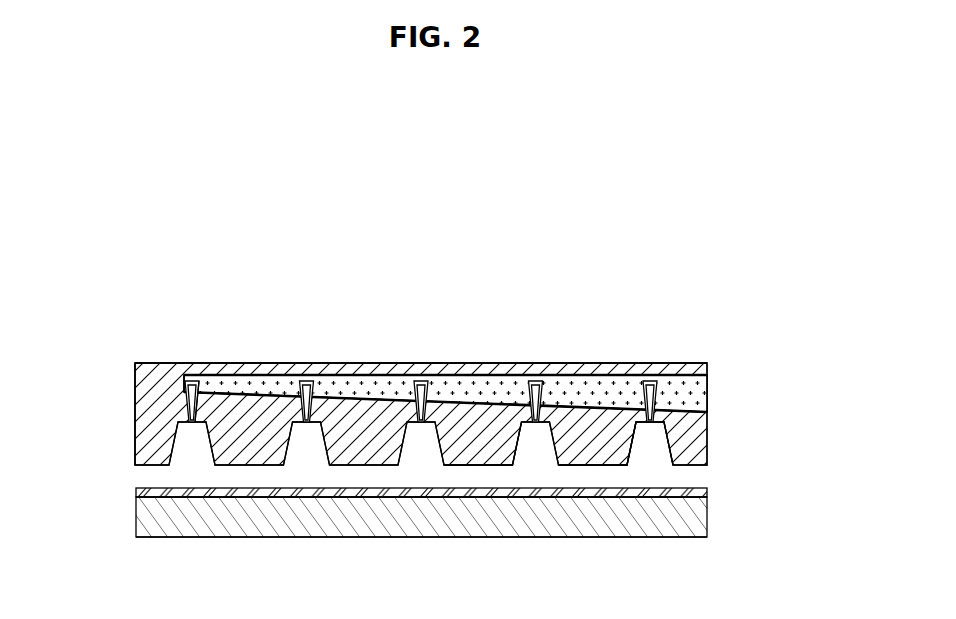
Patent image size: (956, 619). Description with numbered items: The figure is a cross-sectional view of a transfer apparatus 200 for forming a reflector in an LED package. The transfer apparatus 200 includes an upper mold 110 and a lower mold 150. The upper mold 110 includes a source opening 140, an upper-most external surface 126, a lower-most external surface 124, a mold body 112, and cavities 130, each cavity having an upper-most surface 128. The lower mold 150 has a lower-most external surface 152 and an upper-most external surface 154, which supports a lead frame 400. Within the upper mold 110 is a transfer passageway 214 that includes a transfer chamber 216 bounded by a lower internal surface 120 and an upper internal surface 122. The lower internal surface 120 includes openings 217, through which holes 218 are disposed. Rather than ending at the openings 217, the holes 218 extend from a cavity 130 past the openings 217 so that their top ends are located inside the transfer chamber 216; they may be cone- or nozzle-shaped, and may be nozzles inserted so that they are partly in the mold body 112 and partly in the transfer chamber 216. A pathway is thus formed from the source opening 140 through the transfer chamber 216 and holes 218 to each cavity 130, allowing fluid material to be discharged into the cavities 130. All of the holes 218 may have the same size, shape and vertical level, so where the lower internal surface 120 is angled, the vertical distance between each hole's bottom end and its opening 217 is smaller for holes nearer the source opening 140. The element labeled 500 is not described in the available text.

The transfer apparatus 200 is at (415, 137).
The upper mold 110 is at (128, 363).
The mold body 112 is at (152, 372).
The lower internal surface 120 is at (368, 385).
The upper internal surface 122 is at (462, 386).
The lower-most external surface 124 is at (598, 478).
The upper-most external surface 126 is at (523, 366).
The upper-most surface 128 is at (667, 424).
The cavities 130 is at (647, 438).
The source opening 140 is at (707, 394).
The lower mold 150 is at (707, 518).
The lower-most external surface 152 is at (468, 532).
The upper-most external surface 154 is at (430, 493).
The transfer passageway 214 is at (352, 278).
The transfer chamber 216 is at (208, 380).
The openings 217 is at (300, 380).
The holes 218 is at (316, 380).
The lead frame 400 is at (707, 488).
The cover sheet 500 is at (712, 377).